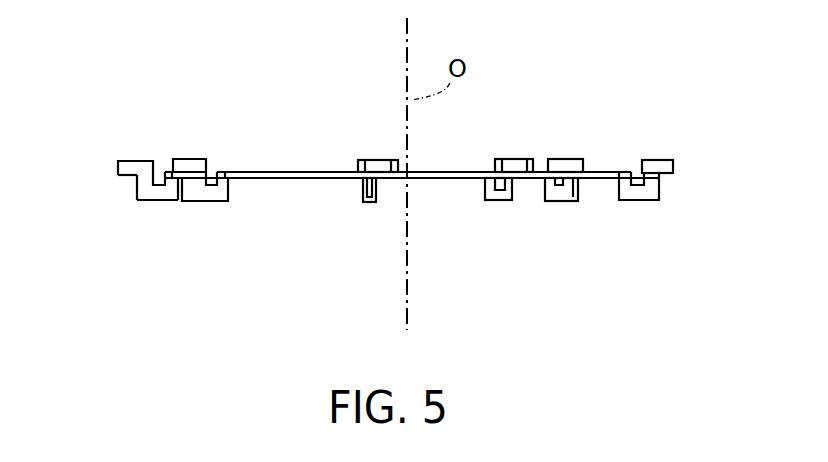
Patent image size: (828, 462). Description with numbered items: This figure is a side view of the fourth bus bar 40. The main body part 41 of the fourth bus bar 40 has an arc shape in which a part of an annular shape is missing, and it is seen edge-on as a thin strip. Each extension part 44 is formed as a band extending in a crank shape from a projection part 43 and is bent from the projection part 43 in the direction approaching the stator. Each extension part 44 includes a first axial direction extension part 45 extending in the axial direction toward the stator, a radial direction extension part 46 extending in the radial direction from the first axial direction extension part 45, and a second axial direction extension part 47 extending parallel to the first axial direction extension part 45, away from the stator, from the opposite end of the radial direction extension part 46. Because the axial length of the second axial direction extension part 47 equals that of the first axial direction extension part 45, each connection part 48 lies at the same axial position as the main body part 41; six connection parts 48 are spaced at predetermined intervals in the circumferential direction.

The fourth bus bar 40 is at (674, 155).
The main body part 41 is at (442, 172).
The projection part 43 is at (168, 173).
The extension part 44 is at (375, 238).
The first axial direction extension part 45 is at (173, 185).
The radial direction extension part 46 is at (158, 187).
The second axial direction extension part 47 is at (143, 183).
The connection part 48 is at (130, 167).